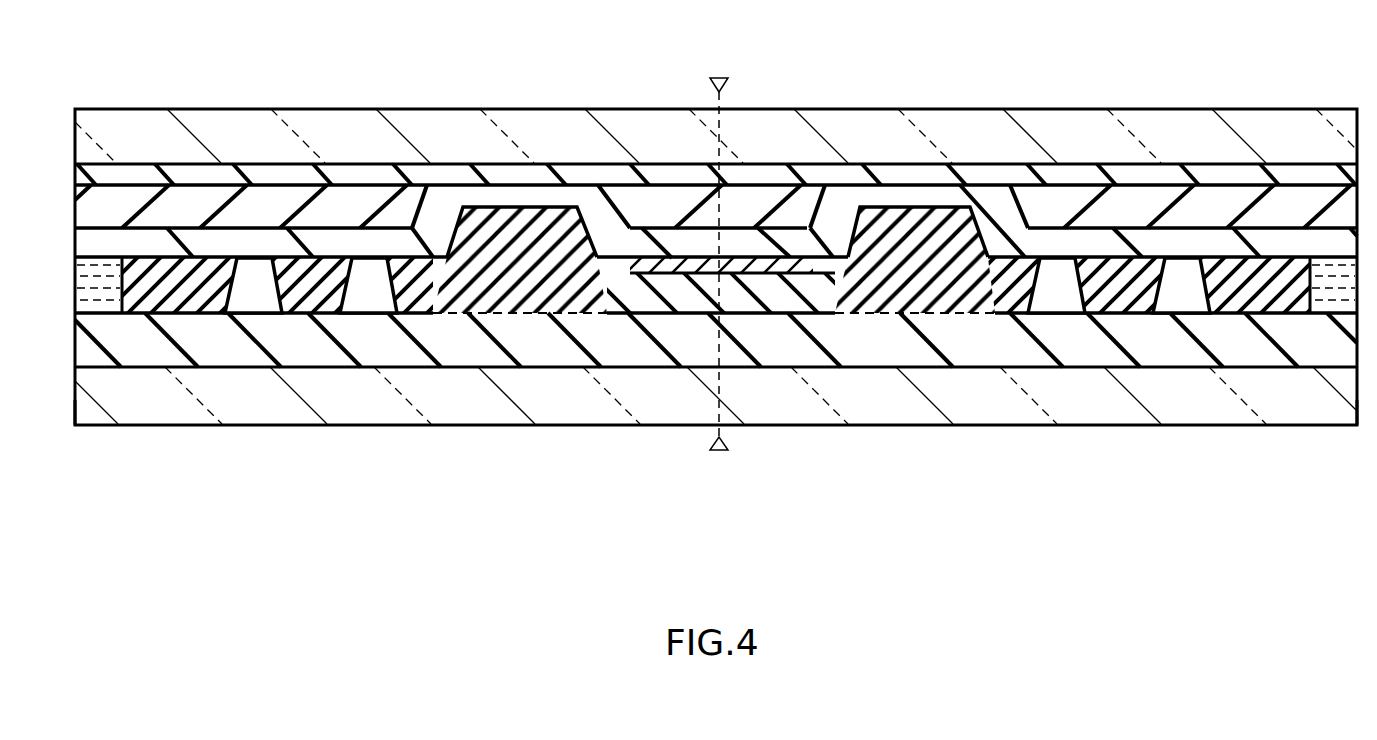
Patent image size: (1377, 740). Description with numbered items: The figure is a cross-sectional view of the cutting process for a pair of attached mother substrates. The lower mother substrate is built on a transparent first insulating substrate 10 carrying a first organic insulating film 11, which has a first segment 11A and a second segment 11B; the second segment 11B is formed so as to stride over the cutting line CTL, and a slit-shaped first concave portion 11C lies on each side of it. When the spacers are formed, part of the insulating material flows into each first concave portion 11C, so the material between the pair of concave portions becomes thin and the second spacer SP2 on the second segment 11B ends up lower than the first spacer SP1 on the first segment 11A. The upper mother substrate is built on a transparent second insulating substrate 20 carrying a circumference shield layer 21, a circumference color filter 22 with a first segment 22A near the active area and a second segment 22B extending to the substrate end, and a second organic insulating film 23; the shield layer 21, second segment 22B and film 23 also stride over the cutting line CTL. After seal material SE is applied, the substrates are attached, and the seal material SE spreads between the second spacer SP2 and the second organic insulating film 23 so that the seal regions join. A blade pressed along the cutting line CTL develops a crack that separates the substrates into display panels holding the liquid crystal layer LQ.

The first insulating substrate 10 is at (704, 420).
The first organic insulating film 11 is at (108, 348).
The first segment 11A is at (432, 358).
The second segment 11B is at (655, 352).
The first concave portion 11C is at (508, 312).
The second insulating substrate 20 is at (681, 118).
The circumference shield layer 21 is at (465, 175).
The circumference color filter 22 is at (188, 204).
The first segment 22A is at (253, 190).
The second segment 22B is at (626, 198).
The second organic insulating film 23 is at (543, 197).
The seal material SE is at (182, 282).
The first spacer SP1 is at (240, 288).
The second spacer SP2 is at (636, 305).
The liquid crystal layer LQ is at (93, 282).
The cutting line CTL is at (728, 87).